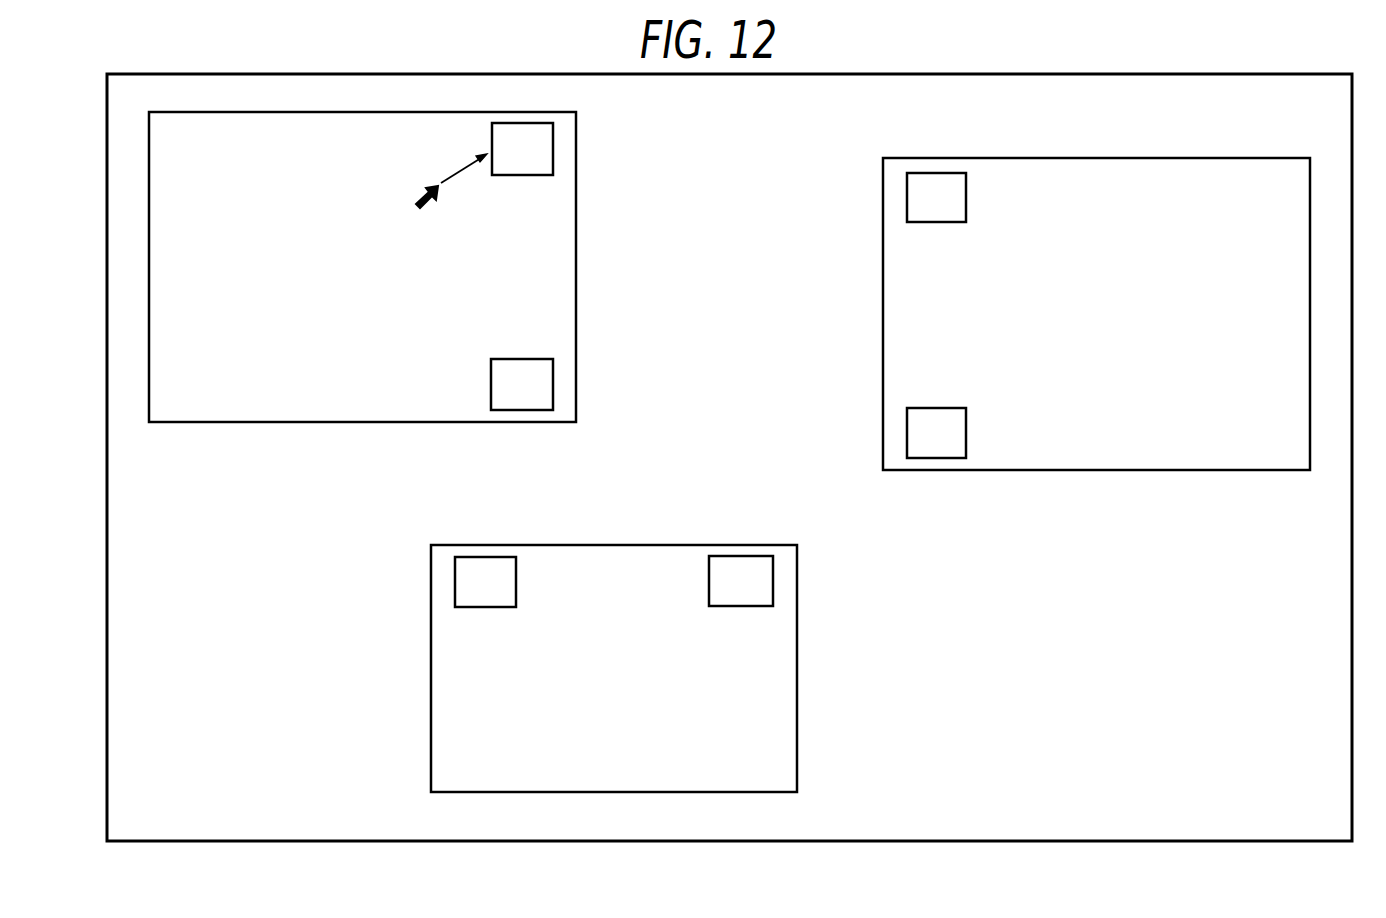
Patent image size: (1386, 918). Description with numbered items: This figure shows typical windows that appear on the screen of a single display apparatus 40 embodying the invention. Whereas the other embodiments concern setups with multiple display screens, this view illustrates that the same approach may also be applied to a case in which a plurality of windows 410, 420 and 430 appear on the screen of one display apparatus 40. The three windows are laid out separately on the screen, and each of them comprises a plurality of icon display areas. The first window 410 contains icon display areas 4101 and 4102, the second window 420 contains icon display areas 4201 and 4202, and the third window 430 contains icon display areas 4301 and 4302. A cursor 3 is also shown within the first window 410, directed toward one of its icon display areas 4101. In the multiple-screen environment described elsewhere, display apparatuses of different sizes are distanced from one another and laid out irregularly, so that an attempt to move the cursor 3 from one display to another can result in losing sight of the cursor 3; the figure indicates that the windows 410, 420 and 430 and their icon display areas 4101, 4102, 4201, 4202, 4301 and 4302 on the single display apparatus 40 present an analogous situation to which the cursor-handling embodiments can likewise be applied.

The display apparatus 40 is at (1353, 113).
The window 410 is at (576, 120).
The icon display area 4101 is at (553, 148).
The icon display area 4102 is at (553, 388).
The cursor 3 is at (418, 208).
The window 420 is at (883, 165).
The icon display area 4201 is at (907, 195).
The icon display area 4202 is at (907, 430).
The window 430 is at (797, 553).
The icon display area 4301 is at (455, 580).
The icon display area 4302 is at (773, 578).